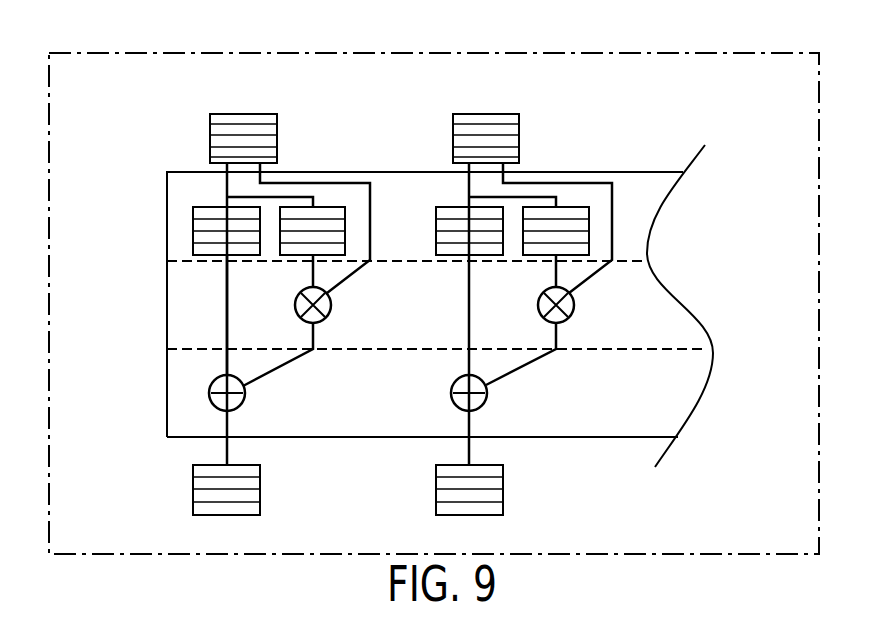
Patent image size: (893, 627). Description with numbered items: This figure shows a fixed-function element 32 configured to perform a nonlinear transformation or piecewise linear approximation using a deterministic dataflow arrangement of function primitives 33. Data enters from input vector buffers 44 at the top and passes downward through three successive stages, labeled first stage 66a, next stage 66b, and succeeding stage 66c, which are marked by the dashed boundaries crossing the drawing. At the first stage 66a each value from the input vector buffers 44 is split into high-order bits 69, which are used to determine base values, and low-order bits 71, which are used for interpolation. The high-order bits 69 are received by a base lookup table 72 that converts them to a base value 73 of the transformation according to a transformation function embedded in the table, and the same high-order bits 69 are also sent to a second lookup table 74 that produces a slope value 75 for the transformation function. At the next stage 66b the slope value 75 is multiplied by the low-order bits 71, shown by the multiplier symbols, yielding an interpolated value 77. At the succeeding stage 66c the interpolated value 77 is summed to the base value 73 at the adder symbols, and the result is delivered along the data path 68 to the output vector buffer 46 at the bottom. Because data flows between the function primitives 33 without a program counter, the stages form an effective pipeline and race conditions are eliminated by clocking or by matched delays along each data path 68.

The fixed-function element 32 is at (133, 53).
The function primitives 33 is at (212, 206).
The input vector buffers 44 is at (243, 113).
The output vector buffer 46 is at (193, 488).
The first stage 66a is at (686, 219).
The next stage 66b is at (715, 302).
The succeeding stage 66c is at (728, 403).
The data path 68 is at (227, 450).
The high-order bits 69 is at (225, 180).
The low-order bits 71 is at (315, 182).
The base lookup table 72 is at (193, 228).
The base value 73 is at (226, 313).
The second lookup table 74 is at (339, 207).
The slope value 75 is at (311, 271).
The interpolated value 77 is at (278, 368).